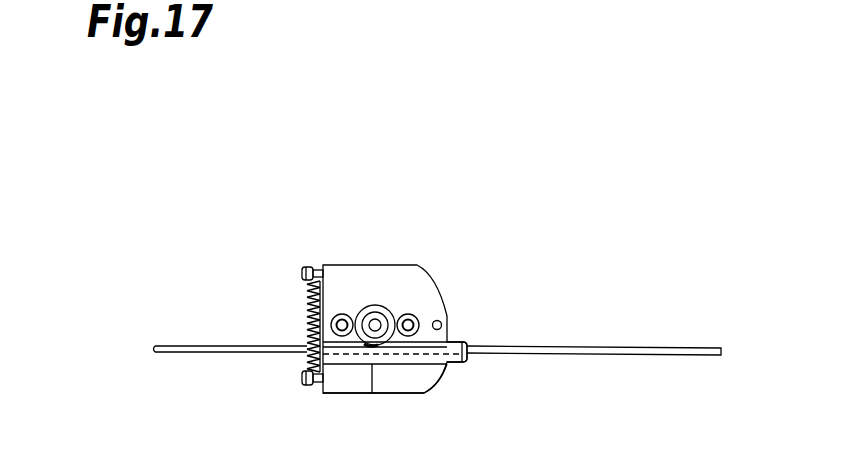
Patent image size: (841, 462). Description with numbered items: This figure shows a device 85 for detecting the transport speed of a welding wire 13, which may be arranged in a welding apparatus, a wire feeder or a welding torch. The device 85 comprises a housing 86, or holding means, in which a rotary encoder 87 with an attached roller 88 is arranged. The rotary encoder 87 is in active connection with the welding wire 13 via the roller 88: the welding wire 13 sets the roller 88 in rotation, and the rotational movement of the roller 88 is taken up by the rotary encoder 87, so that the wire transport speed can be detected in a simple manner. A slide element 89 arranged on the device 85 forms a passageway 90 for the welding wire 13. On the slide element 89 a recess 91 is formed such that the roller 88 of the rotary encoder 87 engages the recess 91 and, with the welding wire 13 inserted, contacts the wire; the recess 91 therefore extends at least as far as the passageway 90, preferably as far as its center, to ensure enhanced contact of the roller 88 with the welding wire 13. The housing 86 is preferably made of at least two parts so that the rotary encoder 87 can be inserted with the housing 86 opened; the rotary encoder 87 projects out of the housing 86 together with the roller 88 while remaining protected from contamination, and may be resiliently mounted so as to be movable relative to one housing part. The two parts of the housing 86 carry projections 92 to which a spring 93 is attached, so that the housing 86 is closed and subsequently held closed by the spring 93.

The welding wire 13 is at (208, 349).
The device for detecting the transport speed of a welding wire 85 is at (420, 256).
The housing 86 is at (377, 275).
The rotary encoder 87 is at (352, 298).
The roller 88 is at (370, 335).
The slide element 89 is at (463, 367).
The passageway 90 is at (447, 350).
The recess 91 is at (368, 349).
The projections 92 is at (318, 268).
The spring 93 is at (310, 315).